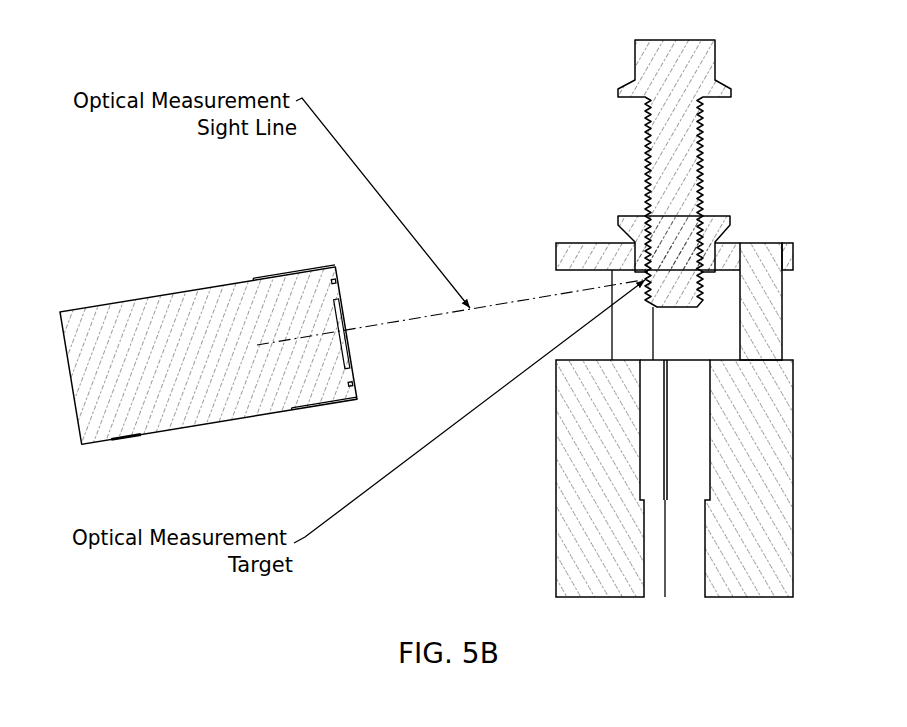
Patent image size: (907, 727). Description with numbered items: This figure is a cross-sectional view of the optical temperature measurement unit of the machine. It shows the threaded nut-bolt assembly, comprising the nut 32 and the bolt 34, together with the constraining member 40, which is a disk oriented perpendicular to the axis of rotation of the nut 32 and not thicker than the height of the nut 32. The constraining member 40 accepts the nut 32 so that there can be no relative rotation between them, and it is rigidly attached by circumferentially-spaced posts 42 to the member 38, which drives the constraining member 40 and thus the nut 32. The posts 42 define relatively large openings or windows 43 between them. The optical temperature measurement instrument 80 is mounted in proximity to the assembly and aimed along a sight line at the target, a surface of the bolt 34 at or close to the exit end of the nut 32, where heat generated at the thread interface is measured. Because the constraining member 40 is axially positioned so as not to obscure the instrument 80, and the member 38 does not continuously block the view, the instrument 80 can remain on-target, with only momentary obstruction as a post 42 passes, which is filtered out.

The nut 32 is at (619, 217).
The bolt 34 is at (635, 53).
The member 38 is at (795, 377).
The constraining member 40 is at (557, 241).
The posts 42 is at (768, 307).
The windows 43 is at (502, 349).
The optical temperature measurement instrument 80 is at (182, 288).